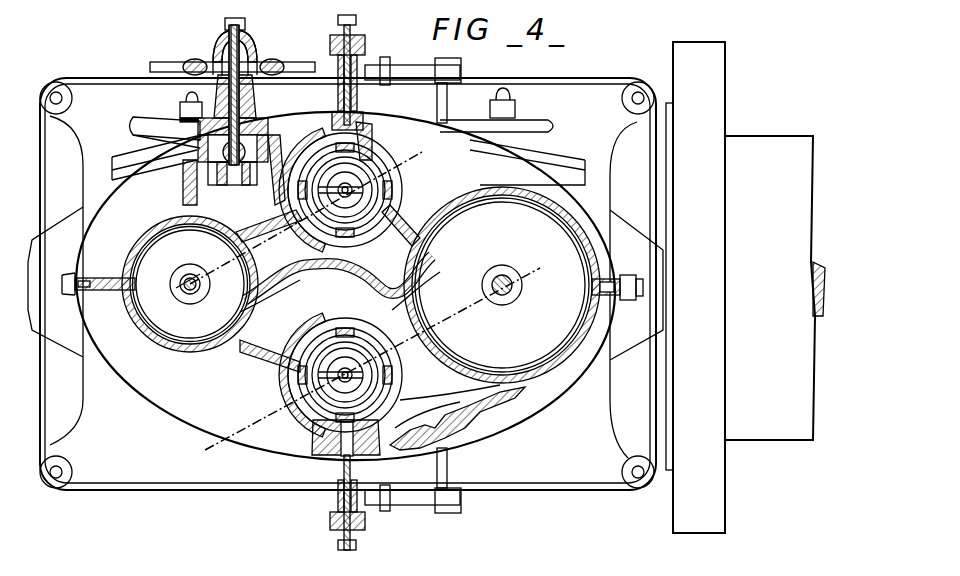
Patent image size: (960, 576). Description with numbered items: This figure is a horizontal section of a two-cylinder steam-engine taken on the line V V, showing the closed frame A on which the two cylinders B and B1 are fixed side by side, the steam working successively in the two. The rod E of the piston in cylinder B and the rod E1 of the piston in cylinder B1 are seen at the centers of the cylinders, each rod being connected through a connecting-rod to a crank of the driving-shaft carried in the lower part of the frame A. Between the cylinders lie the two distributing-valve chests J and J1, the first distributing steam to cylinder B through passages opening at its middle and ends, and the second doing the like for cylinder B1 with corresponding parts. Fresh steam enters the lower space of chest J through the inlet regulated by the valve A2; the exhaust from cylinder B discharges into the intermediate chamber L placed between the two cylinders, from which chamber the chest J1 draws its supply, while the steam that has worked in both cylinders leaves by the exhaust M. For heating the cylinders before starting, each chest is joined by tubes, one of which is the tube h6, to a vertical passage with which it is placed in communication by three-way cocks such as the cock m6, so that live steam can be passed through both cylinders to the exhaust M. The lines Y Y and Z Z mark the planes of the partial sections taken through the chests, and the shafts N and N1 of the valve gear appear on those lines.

In FIG. 4, the frame A is at (345, 284).
The valve A2 is at (258, 62).
The tube h6 is at (335, 96).
The three-way cock m6 is at (366, 70).
In FIG. 4, the cylinder B is at (150, 242).
In FIG. 4, the cylinder B1 is at (490, 204).
In FIG. 4, the piston-rod E is at (192, 290).
In FIG. 4, the piston-rod E1 is at (508, 298).
In FIG. 4, the valve-chest J is at (305, 206).
In FIG. 4, the valve-chest J1 is at (395, 370).
In FIG. 4, the upper pinion shaft N is at (318, 222).
In FIG. 4, the lower pinion shaft N1 is at (355, 362).
In FIG. 4, the intermediate chamber L is at (340, 314).
In FIG. 4, the exhaust M is at (457, 417).
In FIG. 4, the section line V is at (174, 294).
In FIG. 4, the section line Y is at (310, 211).
In FIG. 4, the section line Z is at (371, 361).